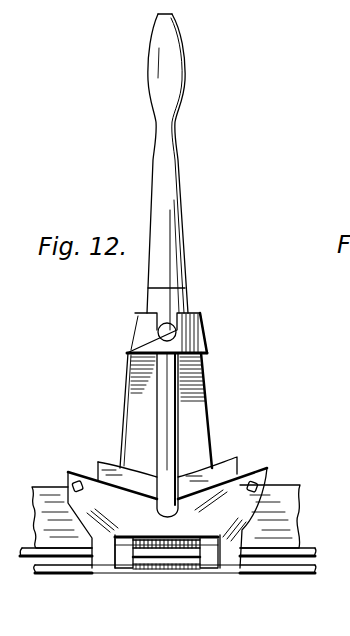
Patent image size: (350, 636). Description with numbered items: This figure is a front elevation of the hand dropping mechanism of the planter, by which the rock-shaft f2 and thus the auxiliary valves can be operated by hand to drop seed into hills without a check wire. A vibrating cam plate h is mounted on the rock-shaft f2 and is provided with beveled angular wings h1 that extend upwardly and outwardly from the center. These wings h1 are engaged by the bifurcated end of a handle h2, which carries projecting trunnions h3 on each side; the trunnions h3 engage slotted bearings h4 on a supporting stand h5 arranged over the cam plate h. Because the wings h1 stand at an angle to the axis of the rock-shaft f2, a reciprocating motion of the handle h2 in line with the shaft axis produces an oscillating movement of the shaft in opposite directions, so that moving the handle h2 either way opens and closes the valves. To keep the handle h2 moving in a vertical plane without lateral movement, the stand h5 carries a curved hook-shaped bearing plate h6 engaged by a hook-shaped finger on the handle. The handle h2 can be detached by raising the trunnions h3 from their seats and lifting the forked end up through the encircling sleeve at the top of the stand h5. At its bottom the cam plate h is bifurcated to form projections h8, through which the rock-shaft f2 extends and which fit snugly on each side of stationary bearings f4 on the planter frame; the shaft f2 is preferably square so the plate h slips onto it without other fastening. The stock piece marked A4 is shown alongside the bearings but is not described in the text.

The vibrating cam plate h is at (167, 518).
The beveled angular wings h1 is at (290, 466).
The handle h2 is at (176, 240).
The trunnions h3 is at (168, 332).
The slotted bearings h4 is at (182, 321).
The supporting stand h5 is at (190, 402).
The curved hook-shaped bearing plate h6 is at (231, 466).
The projections h8 is at (237, 588).
The rock-shaft f2 is at (58, 564).
The stationary bearings f4 is at (210, 577).
The stock strip A4 is at (303, 512).